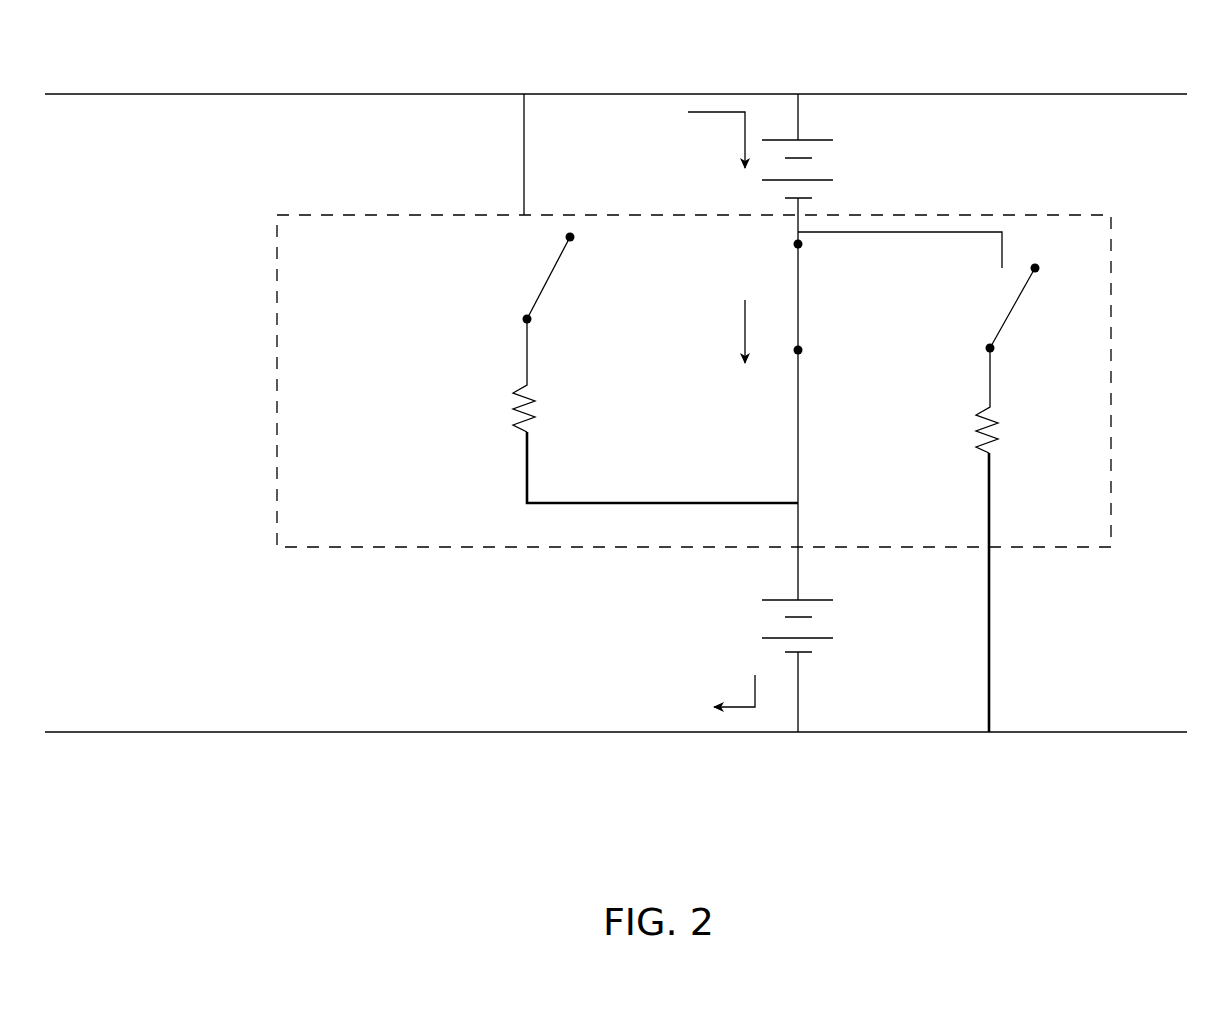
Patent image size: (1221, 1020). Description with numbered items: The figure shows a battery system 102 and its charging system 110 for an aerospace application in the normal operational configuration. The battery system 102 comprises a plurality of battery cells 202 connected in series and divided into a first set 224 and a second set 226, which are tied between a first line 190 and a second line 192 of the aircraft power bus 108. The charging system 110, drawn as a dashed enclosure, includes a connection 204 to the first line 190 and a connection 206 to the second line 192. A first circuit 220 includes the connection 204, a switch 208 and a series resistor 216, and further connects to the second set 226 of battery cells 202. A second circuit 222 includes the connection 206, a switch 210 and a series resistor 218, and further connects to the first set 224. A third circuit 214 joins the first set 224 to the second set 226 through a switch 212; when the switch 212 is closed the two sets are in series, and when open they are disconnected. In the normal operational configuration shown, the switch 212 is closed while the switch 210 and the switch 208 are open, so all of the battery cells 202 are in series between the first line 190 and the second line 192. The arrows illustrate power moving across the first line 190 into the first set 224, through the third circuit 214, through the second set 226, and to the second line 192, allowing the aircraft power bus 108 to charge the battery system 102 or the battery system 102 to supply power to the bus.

The battery system 102 is at (1068, 141).
The aircraft power bus 108 is at (533, 77).
The charging system 110 is at (1113, 213).
The first line 190 is at (834, 94).
The second line 192 is at (604, 733).
The battery cells 202 is at (890, 182).
The connection 204 is at (525, 165).
The connection 206 is at (990, 644).
The switch 208 is at (549, 282).
The switch 210 is at (1011, 312).
The switch 212 is at (800, 300).
The third circuit 214 is at (800, 438).
The resistor 216 is at (529, 387).
The resistor 218 is at (991, 413).
The first circuit 220 is at (478, 372).
The second circuit 222 is at (1034, 355).
The first set 224 is at (852, 150).
The second set 226 is at (718, 611).